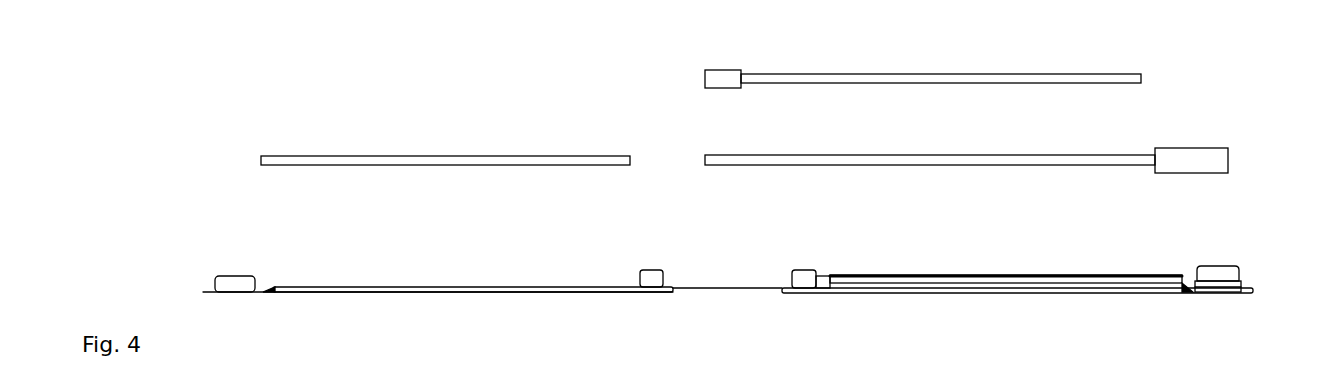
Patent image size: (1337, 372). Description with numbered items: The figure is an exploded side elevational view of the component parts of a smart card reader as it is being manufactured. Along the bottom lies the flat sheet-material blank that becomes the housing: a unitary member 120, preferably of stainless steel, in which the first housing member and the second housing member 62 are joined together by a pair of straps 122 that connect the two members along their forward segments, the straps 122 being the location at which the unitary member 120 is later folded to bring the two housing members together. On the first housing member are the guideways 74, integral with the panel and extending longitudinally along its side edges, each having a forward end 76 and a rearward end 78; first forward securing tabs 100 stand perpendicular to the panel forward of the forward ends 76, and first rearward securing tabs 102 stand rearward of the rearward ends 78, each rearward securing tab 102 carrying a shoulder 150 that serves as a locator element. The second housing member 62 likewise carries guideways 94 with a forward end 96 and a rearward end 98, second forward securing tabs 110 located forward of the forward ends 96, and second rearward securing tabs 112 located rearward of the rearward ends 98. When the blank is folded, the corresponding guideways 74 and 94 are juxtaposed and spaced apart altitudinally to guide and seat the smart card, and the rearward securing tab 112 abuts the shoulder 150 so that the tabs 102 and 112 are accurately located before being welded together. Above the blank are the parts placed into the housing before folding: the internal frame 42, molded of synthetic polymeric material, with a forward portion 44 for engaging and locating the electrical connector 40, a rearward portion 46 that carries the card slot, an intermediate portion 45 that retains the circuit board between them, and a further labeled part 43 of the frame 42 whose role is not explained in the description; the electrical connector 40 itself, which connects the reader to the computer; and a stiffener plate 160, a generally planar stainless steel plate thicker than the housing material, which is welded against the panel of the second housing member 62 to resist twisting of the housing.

The electrical connector 40 is at (723, 70).
The intermediate portion 45 is at (912, 74).
The stiffener plate 160 is at (417, 156).
The internal frame 42 is at (930, 139).
The flexible member body 43 is at (930, 146).
The forward portion 44 is at (715, 157).
The rearward portion 46 is at (1192, 152).
The second housing member 62 is at (447, 263).
The second rearward securing tabs 112 is at (234, 276).
The guideways 94 is at (438, 287).
The rearward end 98 is at (272, 290).
The second forward securing tabs 110 is at (648, 270).
The forward end 96 is at (637, 285).
The unitary member 120 is at (552, 297).
The straps 122 is at (735, 289).
The first forward securing tabs 100 is at (812, 270).
The forward end 76 is at (830, 278).
The guideways 74 is at (960, 275).
The rearward end 78 is at (1180, 278).
The first rearward securing tabs 102 is at (1213, 266).
The shoulder 150 is at (1237, 283).